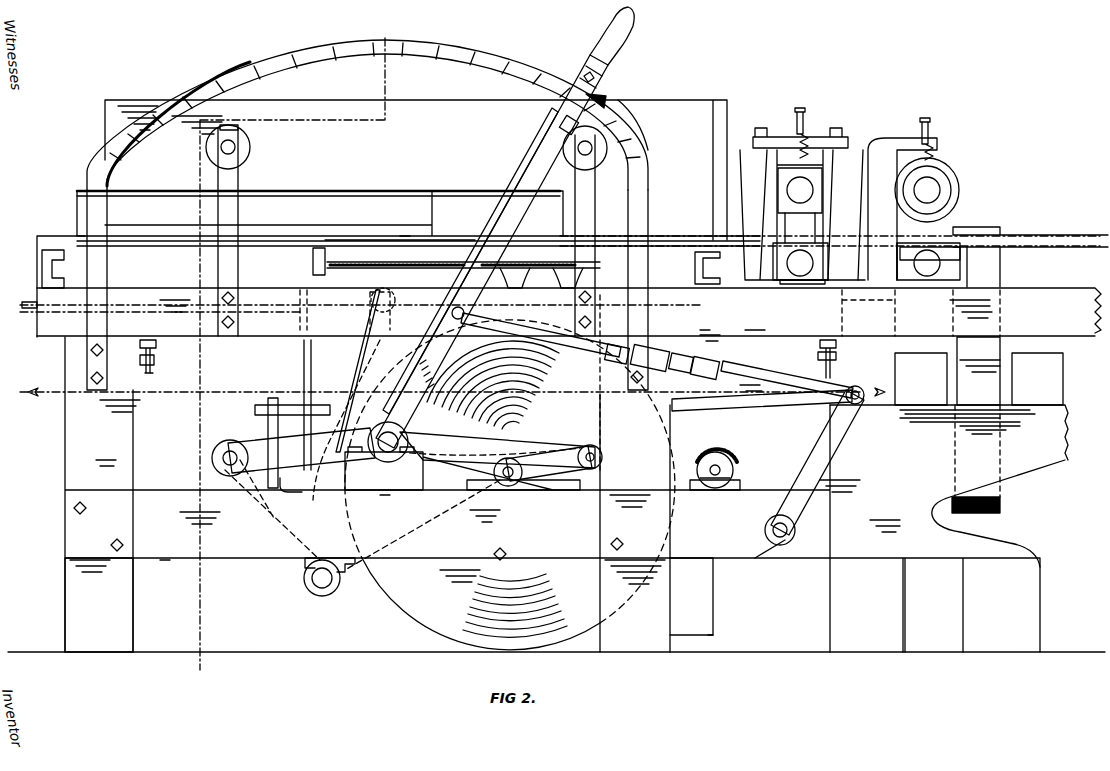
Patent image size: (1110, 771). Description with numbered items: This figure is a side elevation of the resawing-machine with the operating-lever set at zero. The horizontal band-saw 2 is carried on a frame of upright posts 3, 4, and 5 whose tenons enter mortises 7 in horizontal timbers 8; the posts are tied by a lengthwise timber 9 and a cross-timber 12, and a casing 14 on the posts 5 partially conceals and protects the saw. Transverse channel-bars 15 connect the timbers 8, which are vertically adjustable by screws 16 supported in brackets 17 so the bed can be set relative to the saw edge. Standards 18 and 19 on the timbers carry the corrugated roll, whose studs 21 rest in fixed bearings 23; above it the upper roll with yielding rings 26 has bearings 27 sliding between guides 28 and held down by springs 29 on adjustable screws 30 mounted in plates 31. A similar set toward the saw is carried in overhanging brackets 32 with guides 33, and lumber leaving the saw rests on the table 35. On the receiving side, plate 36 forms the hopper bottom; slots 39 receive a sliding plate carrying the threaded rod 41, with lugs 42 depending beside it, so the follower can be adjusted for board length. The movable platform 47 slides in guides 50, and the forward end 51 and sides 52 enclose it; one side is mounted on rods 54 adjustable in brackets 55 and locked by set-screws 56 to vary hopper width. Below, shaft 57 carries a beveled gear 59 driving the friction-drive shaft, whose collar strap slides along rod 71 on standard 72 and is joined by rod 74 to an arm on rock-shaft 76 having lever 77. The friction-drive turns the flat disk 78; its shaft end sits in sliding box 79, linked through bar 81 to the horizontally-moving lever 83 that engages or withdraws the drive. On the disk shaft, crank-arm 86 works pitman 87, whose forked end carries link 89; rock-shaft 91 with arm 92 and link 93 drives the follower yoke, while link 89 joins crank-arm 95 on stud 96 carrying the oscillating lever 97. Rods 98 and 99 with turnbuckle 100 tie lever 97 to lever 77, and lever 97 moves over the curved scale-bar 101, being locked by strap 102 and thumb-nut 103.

The horizontal band-saw 2 is at (1003, 270).
The upright post 3 is at (133, 430).
The upright post 4 is at (385, 36).
The upright post 5 is at (940, 345).
The mortise 7 is at (193, 634).
The horizontal timber 8 is at (1082, 286).
The timber 9 is at (185, 556).
The cross-timber 12 is at (713, 633).
The casing 14 is at (949, 486).
The transverse channel-bar 15 is at (700, 268).
The screw 16 is at (156, 369).
The bracket 17 is at (848, 374).
The standard 18 is at (748, 158).
The standard 19 is at (852, 152).
The stud 21 is at (866, 224).
The fixed bearing 23 is at (826, 266).
The yielding ring 26 is at (800, 217).
The vertically-movable bearing 27 is at (845, 144).
The guide 28 is at (778, 148).
The spring 29 is at (923, 152).
The adjustable screw 30 is at (803, 113).
The plate 31 is at (844, 119).
The overhanging bracket 32 is at (934, 158).
The guide 33 is at (906, 228).
The table 35 is at (1047, 234).
The plate 36 is at (148, 247).
The horizontal slot 39 is at (368, 278).
The threaded rod 41 is at (410, 266).
The lug 42 is at (513, 280).
The movable hopper platform 47 is at (77, 193).
The guide 50 is at (140, 230).
The forward end of hopper 51 is at (727, 108).
The hopper side 52 is at (416, 170).
The rod 54 is at (236, 145).
The bracket 55 is at (240, 176).
The set-screw 56 is at (230, 124).
The horizontal shaft 57 is at (736, 470).
The beveled gear 59 is at (738, 452).
The rod 71 is at (319, 410).
The standard 72 is at (260, 437).
The rod 74 is at (795, 404).
The rock-shaft 76 is at (783, 545).
The operating-lever 77 is at (826, 464).
The flat-surfaced disk 78 is at (510, 485).
The sliding box 79 is at (295, 492).
The bar 81 is at (302, 366).
The horizontally-moving lever 83 is at (30, 302).
The crank-arm 86 is at (590, 468).
The pitman 87 is at (510, 444).
The link 89 is at (228, 478).
The rock-shaft 91 is at (322, 586).
The arm 92 is at (357, 360).
The link 93 is at (518, 260).
The crank-arm 95 is at (292, 445).
The stud 96 is at (395, 440).
The oscillating operating-lever 97 is at (514, 176).
The rod 98 is at (772, 372).
The rod 99 is at (560, 344).
The turnbuckle 100 is at (690, 350).
The curved bar 101 is at (645, 130).
The strap 102 is at (611, 98).
The screw and thumb-nut 103 is at (560, 126).